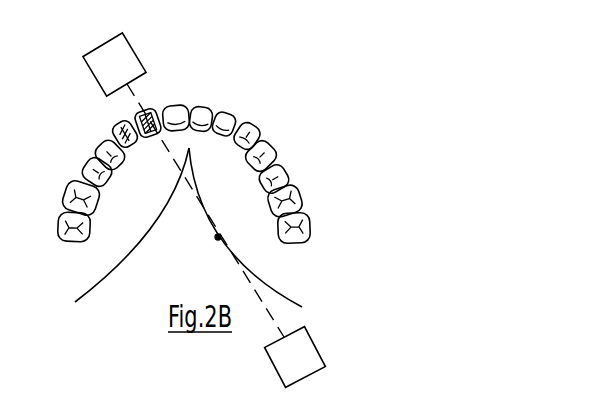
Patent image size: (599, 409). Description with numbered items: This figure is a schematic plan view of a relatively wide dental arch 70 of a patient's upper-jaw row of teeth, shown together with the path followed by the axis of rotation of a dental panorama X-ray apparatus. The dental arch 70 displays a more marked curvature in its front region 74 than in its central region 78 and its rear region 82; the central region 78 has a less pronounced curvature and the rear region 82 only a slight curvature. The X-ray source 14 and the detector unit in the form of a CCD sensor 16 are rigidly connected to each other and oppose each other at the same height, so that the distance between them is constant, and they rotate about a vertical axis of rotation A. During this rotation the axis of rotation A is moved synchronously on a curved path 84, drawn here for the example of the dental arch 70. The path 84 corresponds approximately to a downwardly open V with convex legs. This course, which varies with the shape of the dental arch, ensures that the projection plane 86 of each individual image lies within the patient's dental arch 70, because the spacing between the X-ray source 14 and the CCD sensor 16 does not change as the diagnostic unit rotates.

The X-ray source 14 is at (303, 350).
The CCD sensor 16 is at (123, 58).
The dental arch 70 is at (270, 111).
The front region 74 is at (185, 108).
The central region 78 is at (285, 163).
The rear region 82 is at (313, 210).
The path of the axis of rotation 84 is at (260, 282).
The projection plane 86 is at (132, 118).
The axis of rotation A is at (222, 236).